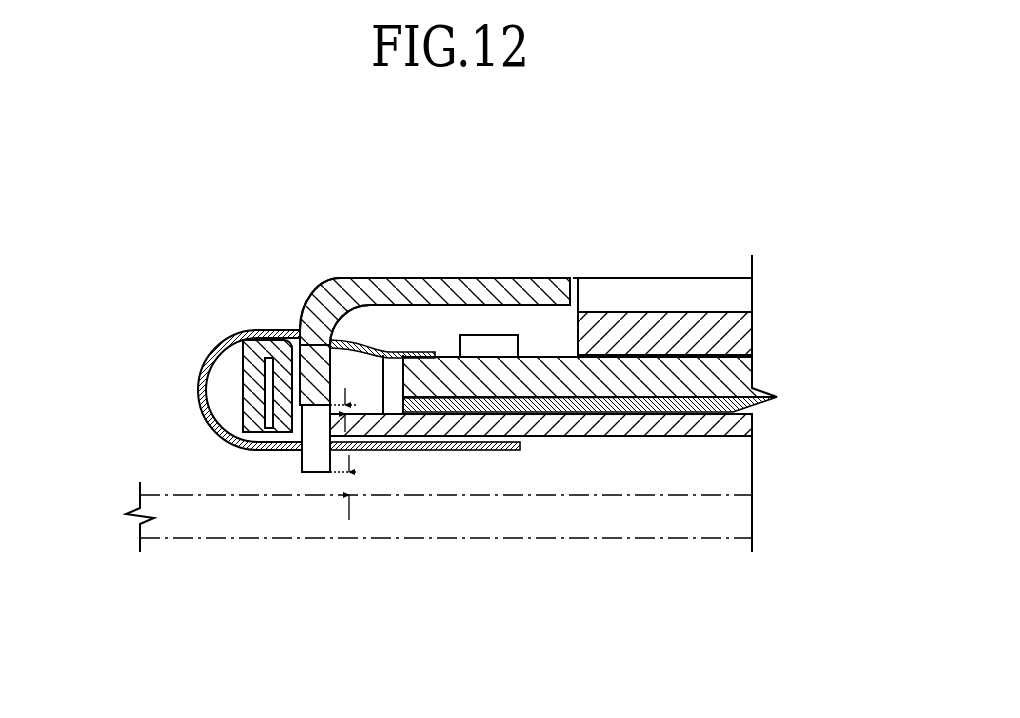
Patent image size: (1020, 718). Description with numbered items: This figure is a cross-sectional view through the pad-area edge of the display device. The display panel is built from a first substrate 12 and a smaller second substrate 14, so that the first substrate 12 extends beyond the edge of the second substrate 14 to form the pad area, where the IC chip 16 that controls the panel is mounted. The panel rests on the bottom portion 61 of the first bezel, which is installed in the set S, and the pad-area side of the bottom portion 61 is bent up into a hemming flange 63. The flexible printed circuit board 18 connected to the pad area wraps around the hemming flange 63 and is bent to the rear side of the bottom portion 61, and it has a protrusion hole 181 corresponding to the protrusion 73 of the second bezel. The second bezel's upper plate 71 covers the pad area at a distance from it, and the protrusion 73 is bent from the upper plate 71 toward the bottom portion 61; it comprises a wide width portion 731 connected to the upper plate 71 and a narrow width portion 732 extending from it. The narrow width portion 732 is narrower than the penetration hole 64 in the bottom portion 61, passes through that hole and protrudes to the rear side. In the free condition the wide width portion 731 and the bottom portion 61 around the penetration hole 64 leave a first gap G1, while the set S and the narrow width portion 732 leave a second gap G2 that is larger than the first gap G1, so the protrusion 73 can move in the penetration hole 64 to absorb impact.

The first substrate 12 is at (628, 372).
The second substrate 14 is at (697, 330).
The IC chip 16 is at (487, 347).
The flexible printed circuit board 18 is at (213, 343).
The protrusion hole 181 is at (321, 289).
The bottom portion 61 is at (628, 423).
The hemming flange 63 is at (262, 347).
The penetration hole 64 is at (319, 413).
The upper plate 71 is at (425, 290).
The protrusion 73 is at (102, 371).
The wide width portion 731 is at (313, 383).
The narrow width portion 732 is at (302, 462).
The set S is at (448, 540).
The first gap G1 is at (357, 400).
The second gap G2 is at (362, 487).